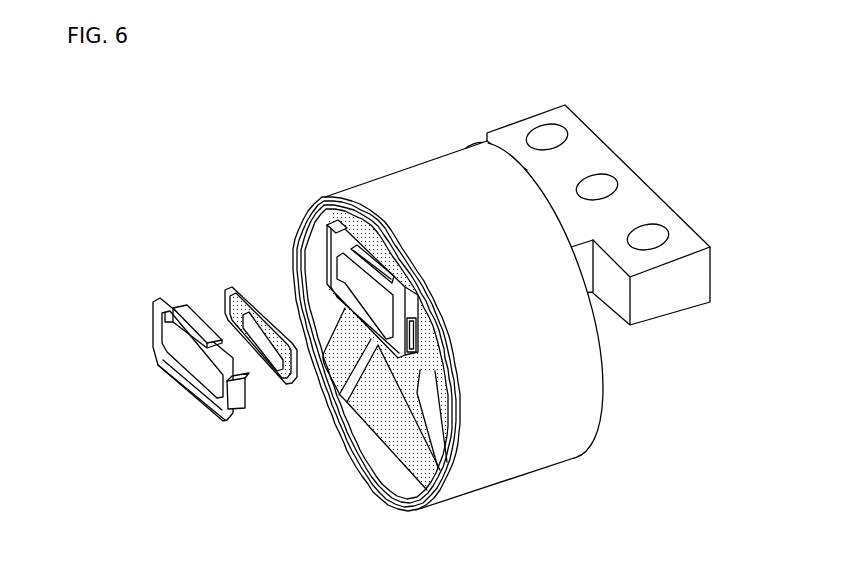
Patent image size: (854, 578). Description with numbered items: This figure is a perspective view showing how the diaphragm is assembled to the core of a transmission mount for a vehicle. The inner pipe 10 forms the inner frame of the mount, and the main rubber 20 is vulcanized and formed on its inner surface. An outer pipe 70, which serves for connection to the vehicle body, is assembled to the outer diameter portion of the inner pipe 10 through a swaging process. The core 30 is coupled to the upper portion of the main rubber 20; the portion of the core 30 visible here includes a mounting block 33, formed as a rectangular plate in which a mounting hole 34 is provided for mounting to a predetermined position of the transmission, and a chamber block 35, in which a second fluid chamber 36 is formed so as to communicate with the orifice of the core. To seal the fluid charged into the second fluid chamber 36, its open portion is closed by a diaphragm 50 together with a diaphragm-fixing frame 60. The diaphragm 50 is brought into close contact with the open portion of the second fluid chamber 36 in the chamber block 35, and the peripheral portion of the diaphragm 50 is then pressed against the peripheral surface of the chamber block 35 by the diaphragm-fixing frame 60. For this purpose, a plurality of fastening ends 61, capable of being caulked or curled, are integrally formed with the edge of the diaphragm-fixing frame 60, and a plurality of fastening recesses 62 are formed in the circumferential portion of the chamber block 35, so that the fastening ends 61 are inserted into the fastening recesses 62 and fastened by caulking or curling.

The inner pipe 10 is at (382, 465).
The main rubber 20 is at (364, 406).
The core 30 is at (645, 147).
The mounting block 33 is at (675, 299).
The mounting hole 34 is at (647, 237).
The chamber block 35 is at (333, 214).
The second fluid chamber 36 is at (357, 280).
The diaphragm 50 is at (240, 287).
The diaphragm-fixing frame 60 is at (140, 306).
The fastening ends 61 is at (188, 308).
The fastening recesses 62 is at (427, 313).
The outer pipe 70 is at (527, 435).